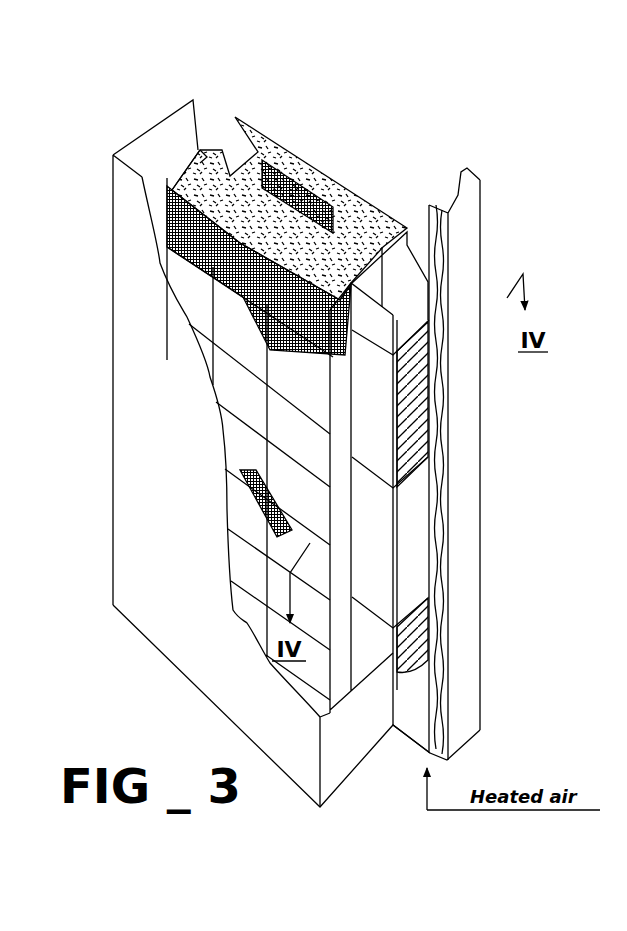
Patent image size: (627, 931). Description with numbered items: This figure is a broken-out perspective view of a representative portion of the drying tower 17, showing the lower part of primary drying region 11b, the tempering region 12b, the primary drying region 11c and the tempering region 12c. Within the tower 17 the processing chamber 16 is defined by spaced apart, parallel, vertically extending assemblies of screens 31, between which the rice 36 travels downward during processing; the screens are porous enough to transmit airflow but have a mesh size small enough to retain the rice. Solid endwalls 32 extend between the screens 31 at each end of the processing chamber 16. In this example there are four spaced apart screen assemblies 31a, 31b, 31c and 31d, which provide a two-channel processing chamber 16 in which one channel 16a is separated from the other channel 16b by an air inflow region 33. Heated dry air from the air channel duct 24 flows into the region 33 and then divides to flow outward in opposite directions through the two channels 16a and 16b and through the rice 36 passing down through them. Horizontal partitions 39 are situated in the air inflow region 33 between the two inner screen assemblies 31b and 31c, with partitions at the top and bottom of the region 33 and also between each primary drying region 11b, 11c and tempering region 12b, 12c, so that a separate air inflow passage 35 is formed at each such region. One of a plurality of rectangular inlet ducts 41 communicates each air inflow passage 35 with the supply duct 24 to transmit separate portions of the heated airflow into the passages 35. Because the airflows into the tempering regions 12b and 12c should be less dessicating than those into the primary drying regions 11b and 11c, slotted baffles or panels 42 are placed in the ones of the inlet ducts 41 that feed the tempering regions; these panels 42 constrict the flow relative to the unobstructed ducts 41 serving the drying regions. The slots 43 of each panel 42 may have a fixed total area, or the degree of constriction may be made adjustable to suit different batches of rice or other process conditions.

The primary drying region 11b is at (260, 305).
The primary drying region 11c is at (250, 437).
The tempering region 12b is at (247, 343).
The tempering region 12c is at (253, 537).
The processing chamber 16 is at (308, 183).
The processing chamber channel 16a is at (345, 193).
The processing chamber channel 16b is at (200, 197).
The drying tower 17 is at (407, 120).
The air channel duct 24 is at (402, 721).
The screen assembly 31 is at (387, 207).
The screen assembly 31a is at (280, 143).
The screen assembly 31b is at (257, 137).
The screen assembly 31c is at (230, 177).
The screen assembly 31d is at (185, 178).
The endwall 32 is at (337, 526).
The air inflow region 33 is at (207, 157).
The air inflow passage 35 is at (414, 556).
The rice 36 is at (260, 243).
The horizontal partition 39 is at (370, 283).
The inlet duct 41 is at (381, 417).
The slotted panel 42 is at (414, 392).
The slot 43 is at (421, 447).